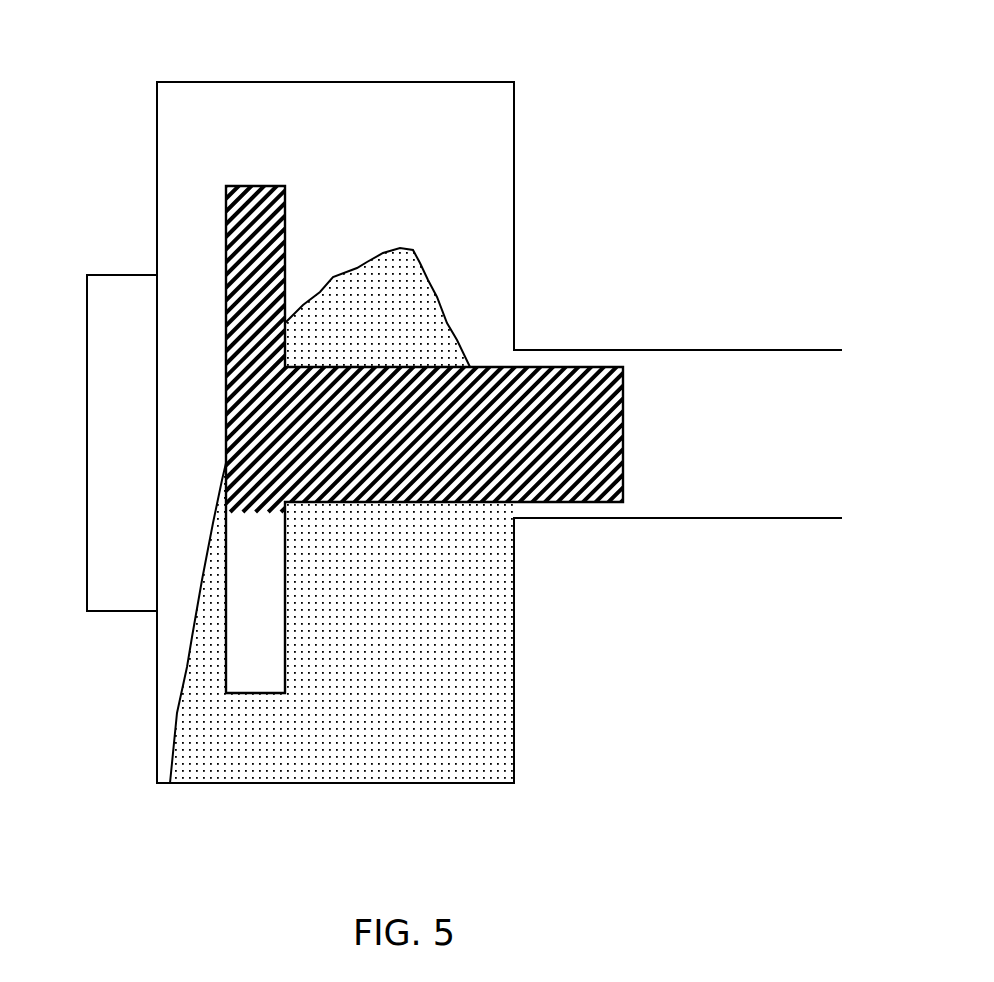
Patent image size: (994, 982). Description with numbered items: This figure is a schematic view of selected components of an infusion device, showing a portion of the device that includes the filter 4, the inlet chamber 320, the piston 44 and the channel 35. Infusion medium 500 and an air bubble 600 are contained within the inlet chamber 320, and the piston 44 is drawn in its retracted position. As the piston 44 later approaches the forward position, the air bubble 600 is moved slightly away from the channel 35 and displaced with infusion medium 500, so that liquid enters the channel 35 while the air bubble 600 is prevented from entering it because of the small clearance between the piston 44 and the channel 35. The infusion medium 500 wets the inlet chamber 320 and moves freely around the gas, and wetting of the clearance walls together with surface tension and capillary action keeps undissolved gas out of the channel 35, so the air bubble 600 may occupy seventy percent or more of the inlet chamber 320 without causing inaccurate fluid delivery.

The infusion medium 500 is at (309, 121).
The inlet chamber 320 is at (518, 195).
The piston 44 is at (552, 447).
The channel 35 is at (767, 520).
The air bubble 600 is at (478, 699).
The filter 4 is at (107, 585).